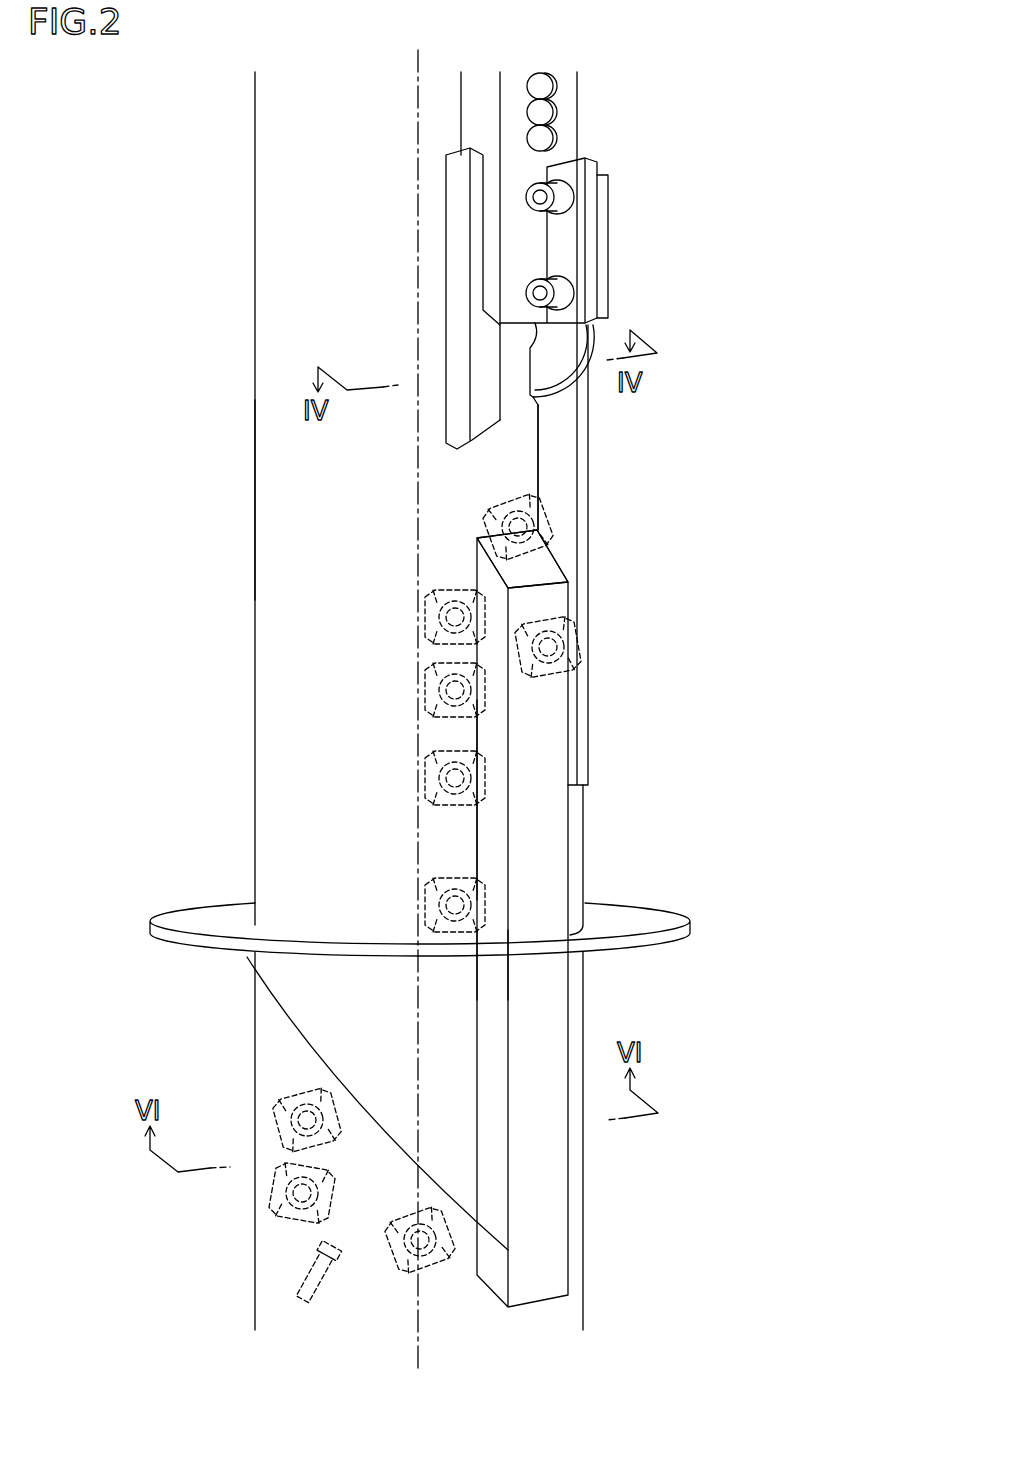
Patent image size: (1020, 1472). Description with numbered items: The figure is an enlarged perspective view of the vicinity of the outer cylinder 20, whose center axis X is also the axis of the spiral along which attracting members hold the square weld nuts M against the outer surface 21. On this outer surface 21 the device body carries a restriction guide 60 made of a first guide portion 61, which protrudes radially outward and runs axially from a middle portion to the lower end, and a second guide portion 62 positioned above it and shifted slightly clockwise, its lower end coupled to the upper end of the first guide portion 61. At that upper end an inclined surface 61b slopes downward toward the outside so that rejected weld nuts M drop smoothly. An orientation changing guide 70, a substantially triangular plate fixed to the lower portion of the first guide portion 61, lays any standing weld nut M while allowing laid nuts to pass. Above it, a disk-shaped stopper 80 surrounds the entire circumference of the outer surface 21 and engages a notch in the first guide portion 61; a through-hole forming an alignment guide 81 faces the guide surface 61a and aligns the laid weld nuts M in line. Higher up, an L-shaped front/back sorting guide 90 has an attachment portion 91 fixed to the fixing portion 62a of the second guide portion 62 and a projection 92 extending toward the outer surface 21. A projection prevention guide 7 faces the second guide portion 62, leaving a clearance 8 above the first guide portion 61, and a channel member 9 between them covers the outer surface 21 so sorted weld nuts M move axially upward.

The projection prevention guide 7 is at (460, 292).
The clearance 8 is at (490, 483).
The channel member 9 is at (568, 112).
The outer cylinder 20 is at (280, 283).
The outer surface 21 is at (278, 487).
The restriction guide 60 is at (548, 824).
The first guide portion 61 is at (548, 762).
The guide surface 61a is at (483, 838).
The inclined surface 61b is at (538, 558).
The second guide portion 62 is at (565, 482).
The fixing portion 62a is at (603, 270).
The orientation changing guide 70 is at (293, 1000).
The stopper 80 is at (300, 943).
The alignment guide 81 is at (466, 952).
The front/back sorting guide 90 is at (572, 330).
The attachment portion 91 is at (577, 232).
The projection 92 is at (537, 368).
The weld nut M is at (477, 537).
The center axis X is at (418, 74).